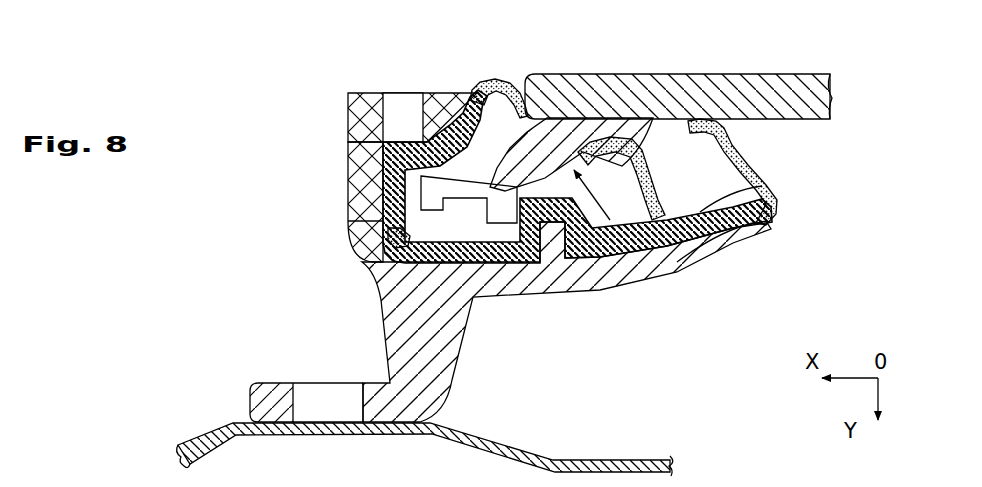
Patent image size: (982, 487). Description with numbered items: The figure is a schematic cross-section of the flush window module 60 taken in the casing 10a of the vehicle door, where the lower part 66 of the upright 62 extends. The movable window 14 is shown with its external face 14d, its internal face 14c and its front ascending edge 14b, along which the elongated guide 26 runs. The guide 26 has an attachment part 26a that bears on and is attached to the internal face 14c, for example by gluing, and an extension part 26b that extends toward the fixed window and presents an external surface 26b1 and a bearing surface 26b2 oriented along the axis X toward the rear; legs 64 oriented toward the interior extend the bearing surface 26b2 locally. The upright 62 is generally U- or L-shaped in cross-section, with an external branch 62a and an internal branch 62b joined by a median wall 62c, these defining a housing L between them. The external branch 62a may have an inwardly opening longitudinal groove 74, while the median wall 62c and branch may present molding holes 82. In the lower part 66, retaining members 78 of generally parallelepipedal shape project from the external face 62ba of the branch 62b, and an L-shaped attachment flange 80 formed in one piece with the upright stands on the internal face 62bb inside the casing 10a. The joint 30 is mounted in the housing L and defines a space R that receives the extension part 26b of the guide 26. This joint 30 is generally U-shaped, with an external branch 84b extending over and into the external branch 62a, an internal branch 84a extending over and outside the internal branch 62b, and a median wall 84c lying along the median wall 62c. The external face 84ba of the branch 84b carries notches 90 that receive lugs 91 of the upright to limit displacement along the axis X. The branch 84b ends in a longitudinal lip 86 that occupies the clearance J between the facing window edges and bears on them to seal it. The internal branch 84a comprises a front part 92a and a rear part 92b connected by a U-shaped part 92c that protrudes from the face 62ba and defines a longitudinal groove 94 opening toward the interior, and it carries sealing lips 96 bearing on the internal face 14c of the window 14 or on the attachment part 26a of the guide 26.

The casing 10a is at (316, 331).
The movable window 14 is at (800, 73).
The front ascending edge 14b is at (528, 92).
The internal face 14c is at (808, 120).
The external face 14d is at (750, 74).
The guide 26 is at (627, 262).
The attachment part 26a is at (570, 100).
The extension part 26b is at (430, 300).
The external surface 26b1 is at (420, 190).
The bearing surface 26b2 is at (553, 224).
The joint 30 is at (790, 203).
The flush window module 60 is at (330, 80).
The upright 62 is at (774, 253).
The external branch 62a is at (392, 107).
The internal branch 62b is at (712, 258).
The external face 62ba is at (770, 226).
The internal face 62bb is at (680, 280).
The median wall 62c is at (348, 163).
The legs 64 is at (520, 207).
The lower part 66 is at (763, 272).
The longitudinal groove 74 is at (380, 105).
The retaining members 78 is at (620, 216).
The attachment flange 80 is at (455, 394).
The holes 82 is at (378, 92).
The internal branch 84a is at (770, 196).
The external branch 84b is at (460, 147).
The external face 84ba is at (432, 112).
The median wall 84c is at (385, 243).
The longitudinal lip 86 is at (490, 80).
The notches 90 is at (395, 130).
The lugs 91 is at (386, 152).
The front part 92a is at (493, 200).
The rear part 92b is at (660, 210).
The U-shaped part 92c is at (625, 77).
The longitudinal groove 94 is at (590, 224).
The sealing lips 96 is at (686, 119).
The clearance J is at (507, 77).
The housing L is at (370, 215).
The space R is at (365, 359).